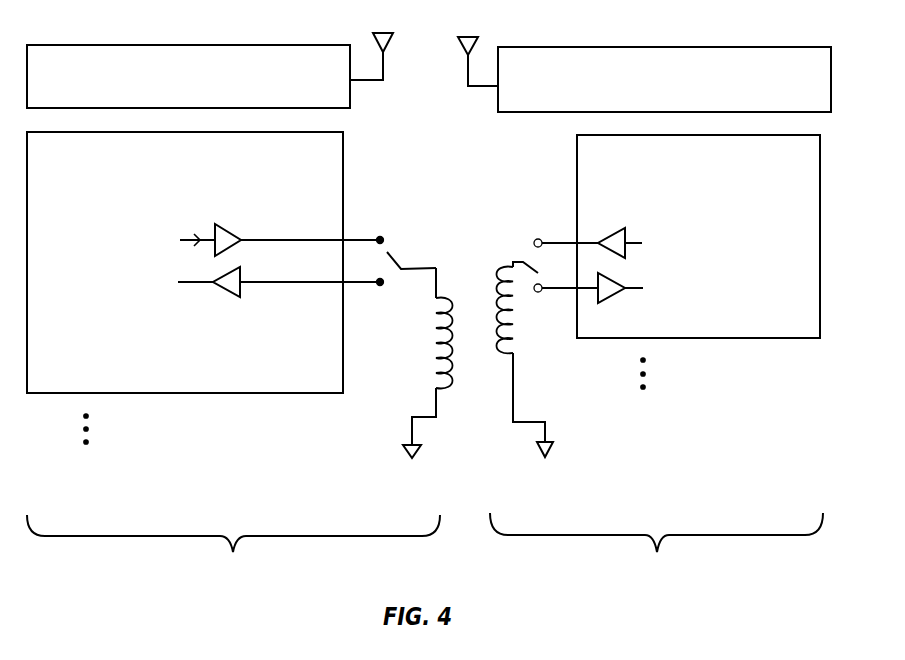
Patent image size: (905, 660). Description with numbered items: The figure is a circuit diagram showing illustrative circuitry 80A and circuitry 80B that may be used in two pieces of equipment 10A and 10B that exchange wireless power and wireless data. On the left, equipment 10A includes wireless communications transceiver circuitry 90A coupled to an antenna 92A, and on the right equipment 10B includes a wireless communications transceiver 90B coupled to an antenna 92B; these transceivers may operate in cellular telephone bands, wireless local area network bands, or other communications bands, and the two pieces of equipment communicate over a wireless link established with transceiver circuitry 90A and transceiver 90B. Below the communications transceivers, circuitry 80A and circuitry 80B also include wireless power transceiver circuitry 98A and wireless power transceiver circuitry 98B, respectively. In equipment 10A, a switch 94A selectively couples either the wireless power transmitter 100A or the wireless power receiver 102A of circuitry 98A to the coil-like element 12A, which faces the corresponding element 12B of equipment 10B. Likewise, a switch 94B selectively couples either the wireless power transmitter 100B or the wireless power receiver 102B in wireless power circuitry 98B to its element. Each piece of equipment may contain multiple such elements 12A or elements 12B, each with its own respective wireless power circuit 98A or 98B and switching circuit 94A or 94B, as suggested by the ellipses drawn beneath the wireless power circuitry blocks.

The equipment 10A is at (233, 545).
The equipment 10B is at (656, 544).
The element 12A is at (450, 276).
The element 12B is at (488, 264).
The circuitry 80A is at (177, 417).
The circuitry 80B is at (740, 377).
The wireless communications transceiver circuitry 90A is at (350, 107).
The wireless communications transceiver 90B is at (498, 107).
The antenna 92A is at (393, 38).
The antenna 92B is at (460, 49).
The switch 94A is at (380, 297).
The switch 94B is at (545, 306).
The wireless power transceiver circuitry 98A is at (343, 187).
The wireless power transceiver circuitry 98B is at (577, 168).
The wireless power transmitter 100A is at (243, 214).
The wireless power transmitter 100B is at (657, 218).
The wireless power receiver 102A is at (221, 306).
The wireless power receiver 102B is at (659, 315).